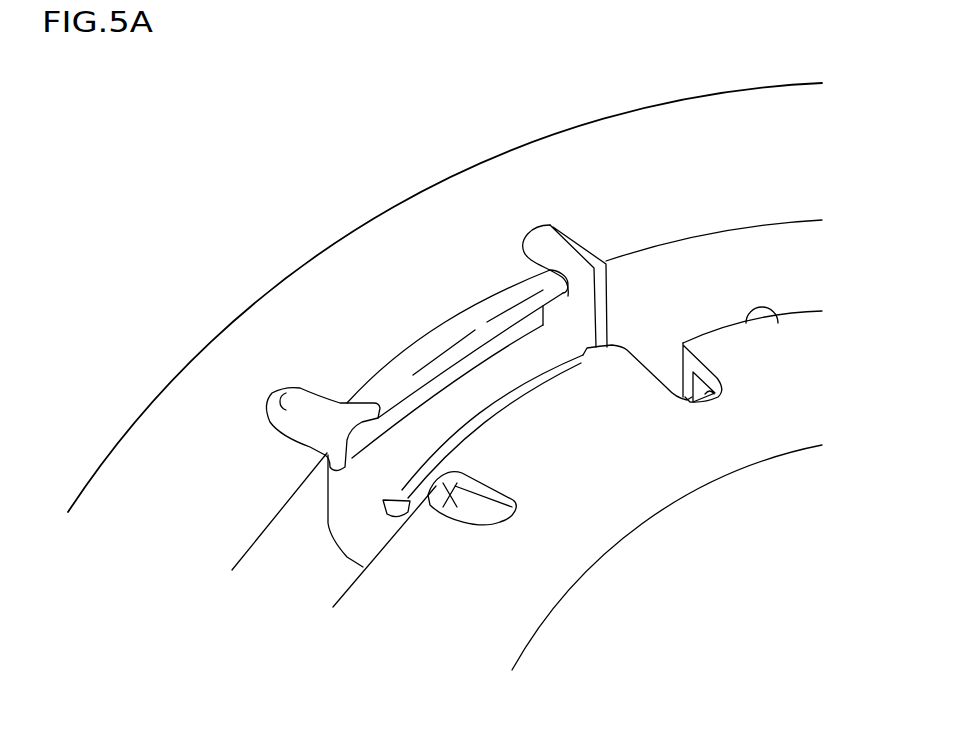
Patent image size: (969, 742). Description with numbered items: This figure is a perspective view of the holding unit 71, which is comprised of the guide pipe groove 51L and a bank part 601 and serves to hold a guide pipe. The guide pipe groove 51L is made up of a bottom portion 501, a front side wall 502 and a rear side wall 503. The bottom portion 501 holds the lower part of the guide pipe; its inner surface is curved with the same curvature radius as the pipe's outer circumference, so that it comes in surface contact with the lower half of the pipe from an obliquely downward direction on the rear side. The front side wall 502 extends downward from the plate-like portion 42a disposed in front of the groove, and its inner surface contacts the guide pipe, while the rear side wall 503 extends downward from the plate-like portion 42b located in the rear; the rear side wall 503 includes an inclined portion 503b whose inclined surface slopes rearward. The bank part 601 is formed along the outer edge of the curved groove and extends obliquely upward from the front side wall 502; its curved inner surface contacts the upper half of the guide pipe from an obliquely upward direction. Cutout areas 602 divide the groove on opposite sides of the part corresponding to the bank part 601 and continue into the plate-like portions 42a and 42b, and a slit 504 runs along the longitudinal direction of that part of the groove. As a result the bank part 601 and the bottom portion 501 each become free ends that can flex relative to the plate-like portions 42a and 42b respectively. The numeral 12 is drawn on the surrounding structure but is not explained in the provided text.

The body frame 12 is at (694, 86).
The plate-like portion 42a is at (565, 160).
The plate-like portion 42b is at (660, 503).
The guide pipe groove 51L is at (797, 298).
The holding unit 71 is at (425, 308).
The bank part 601 is at (498, 300).
The front side wall 502 is at (338, 430).
The bottom portion 501 is at (713, 320).
The rear side wall 503 is at (778, 323).
The inclined portion 503b is at (513, 518).
The slit 504 is at (500, 390).
The cutout area 602 is at (280, 387).